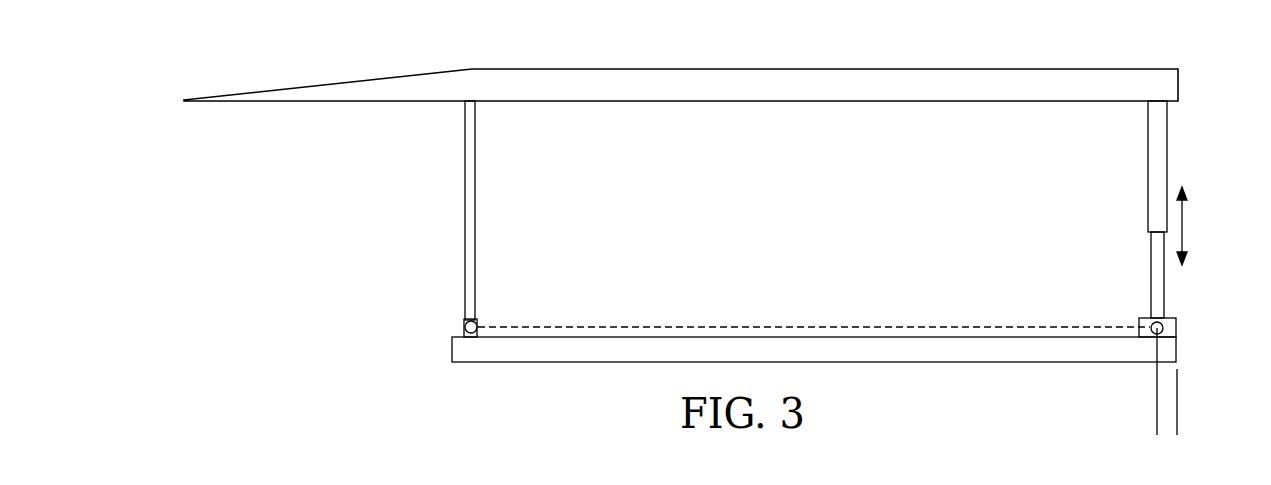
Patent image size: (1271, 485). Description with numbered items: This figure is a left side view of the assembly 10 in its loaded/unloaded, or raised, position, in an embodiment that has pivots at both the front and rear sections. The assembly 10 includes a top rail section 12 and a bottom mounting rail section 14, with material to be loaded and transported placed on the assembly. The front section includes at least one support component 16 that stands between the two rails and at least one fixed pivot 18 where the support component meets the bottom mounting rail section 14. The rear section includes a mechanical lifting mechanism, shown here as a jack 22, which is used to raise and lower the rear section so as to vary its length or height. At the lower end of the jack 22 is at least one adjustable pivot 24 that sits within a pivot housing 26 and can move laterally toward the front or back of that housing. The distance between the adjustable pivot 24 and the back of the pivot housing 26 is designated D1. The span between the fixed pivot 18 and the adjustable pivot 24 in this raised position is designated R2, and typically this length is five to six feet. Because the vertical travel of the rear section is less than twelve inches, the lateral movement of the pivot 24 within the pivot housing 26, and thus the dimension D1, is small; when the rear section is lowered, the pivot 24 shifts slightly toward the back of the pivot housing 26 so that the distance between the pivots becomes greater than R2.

The assembly 10 is at (355, 337).
The top rail section 12 is at (768, 78).
The bottom mounting rail section 14 is at (908, 353).
The support component 16 is at (468, 206).
The pivot mechanism 18 is at (465, 324).
The jack 22 is at (1160, 150).
The adjustable pivot 24 is at (1152, 322).
The pivot housing 26 is at (1168, 330).
The length between pivots in raised position R2 is at (750, 327).
The distance between pivot and back of pivot housing D1 is at (1215, 407).